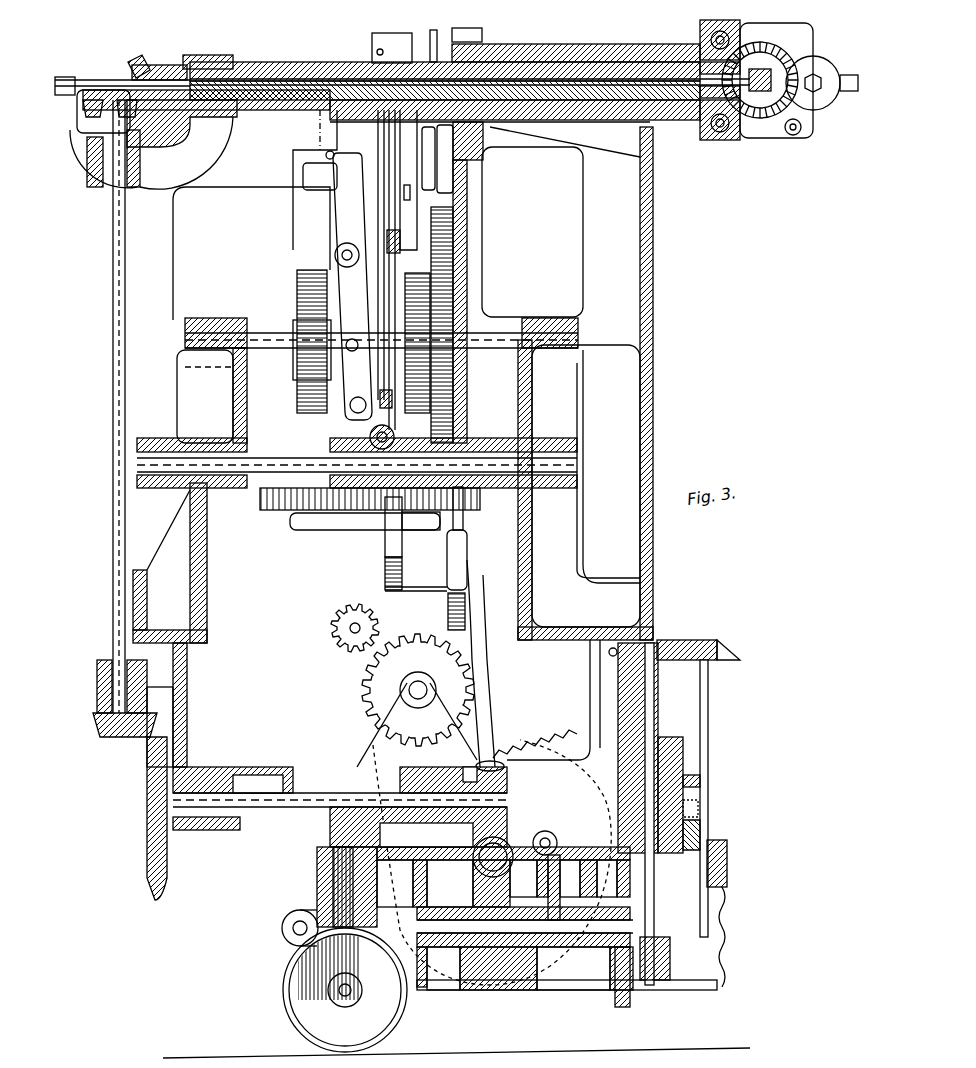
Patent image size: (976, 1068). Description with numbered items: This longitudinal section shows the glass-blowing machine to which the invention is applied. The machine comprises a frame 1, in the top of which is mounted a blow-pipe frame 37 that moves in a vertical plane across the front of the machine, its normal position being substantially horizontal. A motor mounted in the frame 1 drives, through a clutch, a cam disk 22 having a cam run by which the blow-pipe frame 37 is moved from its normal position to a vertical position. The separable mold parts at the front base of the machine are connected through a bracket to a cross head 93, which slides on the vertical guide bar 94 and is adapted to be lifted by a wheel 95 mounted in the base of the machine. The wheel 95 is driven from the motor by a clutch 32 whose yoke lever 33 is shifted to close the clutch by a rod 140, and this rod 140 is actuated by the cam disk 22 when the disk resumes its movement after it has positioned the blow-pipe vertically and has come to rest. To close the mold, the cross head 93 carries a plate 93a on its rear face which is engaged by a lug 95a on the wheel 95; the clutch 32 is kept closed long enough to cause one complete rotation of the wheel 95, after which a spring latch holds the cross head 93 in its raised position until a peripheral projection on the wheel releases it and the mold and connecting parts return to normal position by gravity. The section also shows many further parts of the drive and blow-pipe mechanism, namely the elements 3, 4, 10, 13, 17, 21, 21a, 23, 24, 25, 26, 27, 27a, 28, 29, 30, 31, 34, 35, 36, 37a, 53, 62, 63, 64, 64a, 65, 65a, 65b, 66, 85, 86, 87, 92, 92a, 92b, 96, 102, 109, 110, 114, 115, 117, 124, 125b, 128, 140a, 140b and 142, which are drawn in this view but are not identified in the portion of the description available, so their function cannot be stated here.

The frame 1 is at (612, 437).
The pinion 3 is at (350, 629).
The gear wheel 4 is at (418, 695).
The pawl 10 is at (445, 528).
The rack 13 is at (285, 508).
The gear 17 is at (445, 292).
The shaft 21 is at (300, 348).
The bearing 21a is at (255, 302).
The cam disk 22 is at (440, 272).
The gear 23 is at (320, 300).
The pivot pin 24 is at (312, 396).
The lever 25 is at (333, 213).
The pivot 26 is at (350, 407).
The gear 27 is at (537, 755).
The bearing 27a is at (480, 860).
The pin 28 is at (503, 784).
The shaft 29 is at (350, 797).
The housing 30 is at (490, 978).
The shaft 31 is at (458, 950).
The clutch 32 is at (530, 950).
The yoke lever 33 is at (553, 862).
The tube 34 is at (600, 78).
The sleeve 35 is at (560, 62).
The outer sleeve 36 is at (655, 50).
The blow-pipe frame 37 is at (722, 130).
The ratchet wheel 37a is at (745, 32).
The pin 53 is at (802, 130).
The knob 62 is at (795, 70).
The screw 63 is at (728, 58).
The tube 64 is at (675, 95).
The clamp 64a is at (148, 68).
The rod 65 is at (112, 222).
The bracket 65a is at (150, 145).
The cup 65b is at (112, 738).
The pointer 66 is at (148, 855).
The cap 85 is at (482, 44).
The slide 86 is at (468, 224).
The bar 87 is at (558, 470).
The rod 92 is at (708, 766).
The block 92a is at (720, 862).
The lug 92b is at (700, 783).
The cross head 93 is at (672, 752).
The plate 93a is at (665, 827).
The vertical guide bar 94 is at (668, 640).
The wheel 95 is at (630, 995).
The lug 95a is at (655, 890).
The pin 96 is at (700, 812).
The clip 102 is at (437, 45).
The pin 109 is at (445, 198).
The lever 110 is at (370, 510).
The collar 114 is at (245, 82).
The nut 115 is at (707, 105).
The collar 117 is at (470, 233).
The ratchet bar 124 is at (310, 510).
The arm 125b is at (355, 502).
The slide 128 is at (390, 520).
The rod 140 is at (463, 520).
The shaft 140a is at (490, 475).
The spring 140b is at (450, 612).
The link 142 is at (487, 712).